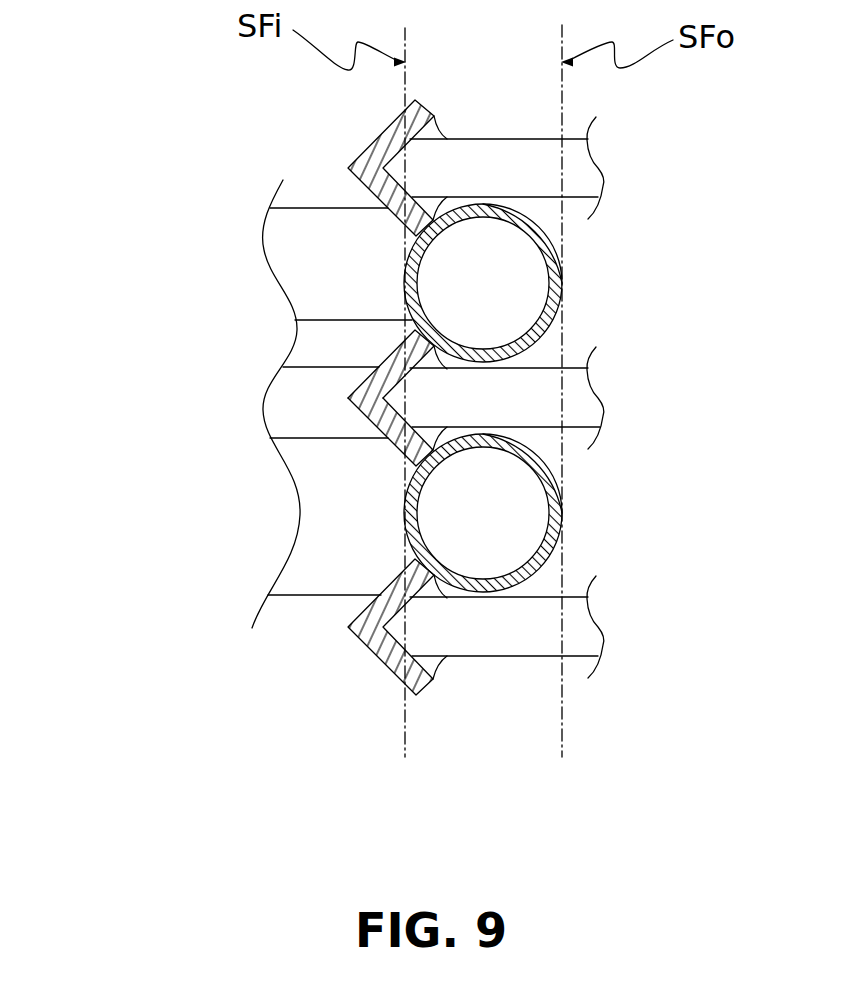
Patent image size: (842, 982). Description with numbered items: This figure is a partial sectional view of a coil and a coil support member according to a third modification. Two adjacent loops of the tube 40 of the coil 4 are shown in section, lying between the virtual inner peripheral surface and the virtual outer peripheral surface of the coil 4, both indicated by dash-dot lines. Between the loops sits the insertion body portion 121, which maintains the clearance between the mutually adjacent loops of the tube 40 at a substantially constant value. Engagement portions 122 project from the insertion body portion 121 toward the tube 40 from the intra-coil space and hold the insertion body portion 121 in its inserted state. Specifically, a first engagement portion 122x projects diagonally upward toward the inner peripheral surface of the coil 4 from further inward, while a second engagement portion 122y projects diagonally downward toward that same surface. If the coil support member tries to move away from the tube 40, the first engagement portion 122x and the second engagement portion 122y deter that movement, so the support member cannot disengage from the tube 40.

The tube 40 is at (405, 263).
The coil 4 is at (338, 387).
The insertion body portion 121 is at (502, 387).
The engagement portion 122 is at (237, 397).
The first engagement portion 122x is at (410, 343).
The second engagement portion 122y is at (402, 433).